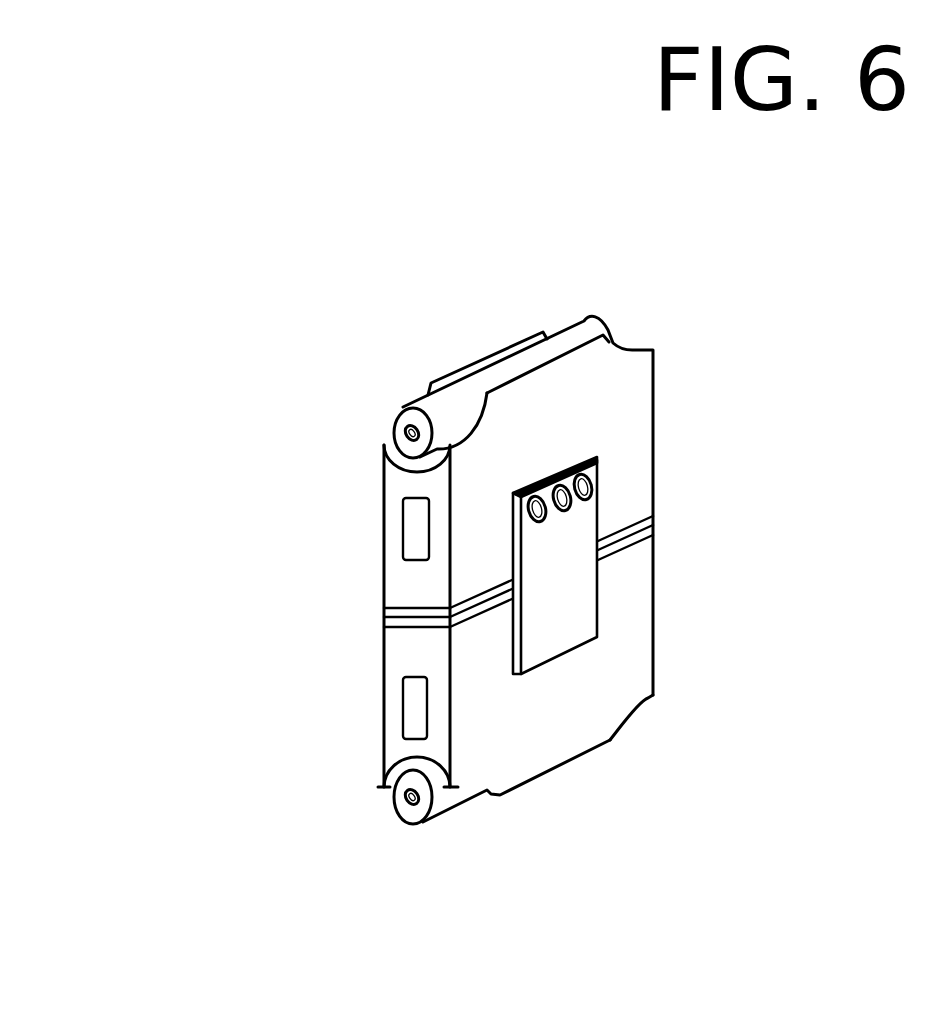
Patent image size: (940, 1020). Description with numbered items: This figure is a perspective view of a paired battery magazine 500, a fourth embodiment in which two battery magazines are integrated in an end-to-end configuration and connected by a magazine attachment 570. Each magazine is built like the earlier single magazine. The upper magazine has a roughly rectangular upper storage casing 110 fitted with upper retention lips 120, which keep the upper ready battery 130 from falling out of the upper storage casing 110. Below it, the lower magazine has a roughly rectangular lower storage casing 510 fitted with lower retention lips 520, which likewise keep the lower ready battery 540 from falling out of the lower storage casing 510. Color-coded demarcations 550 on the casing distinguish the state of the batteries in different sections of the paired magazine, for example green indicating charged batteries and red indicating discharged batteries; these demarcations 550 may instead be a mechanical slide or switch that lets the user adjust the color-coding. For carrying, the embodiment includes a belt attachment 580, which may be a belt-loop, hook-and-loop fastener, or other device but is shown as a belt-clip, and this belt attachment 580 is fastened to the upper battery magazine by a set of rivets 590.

The paired battery magazine 500 is at (260, 398).
The upper storage casing 110 is at (597, 411).
The upper retention lips 120 is at (588, 361).
The upper ready battery 130 is at (448, 400).
The lower storage casing 510 is at (613, 663).
The lower retention lips 520 is at (542, 753).
The lower ready battery 540 is at (443, 797).
The color-coded demarcations 550 is at (417, 713).
The magazine attachment 570 is at (659, 520).
The belt attachment 580 is at (570, 597).
The rivets 590 is at (588, 482).